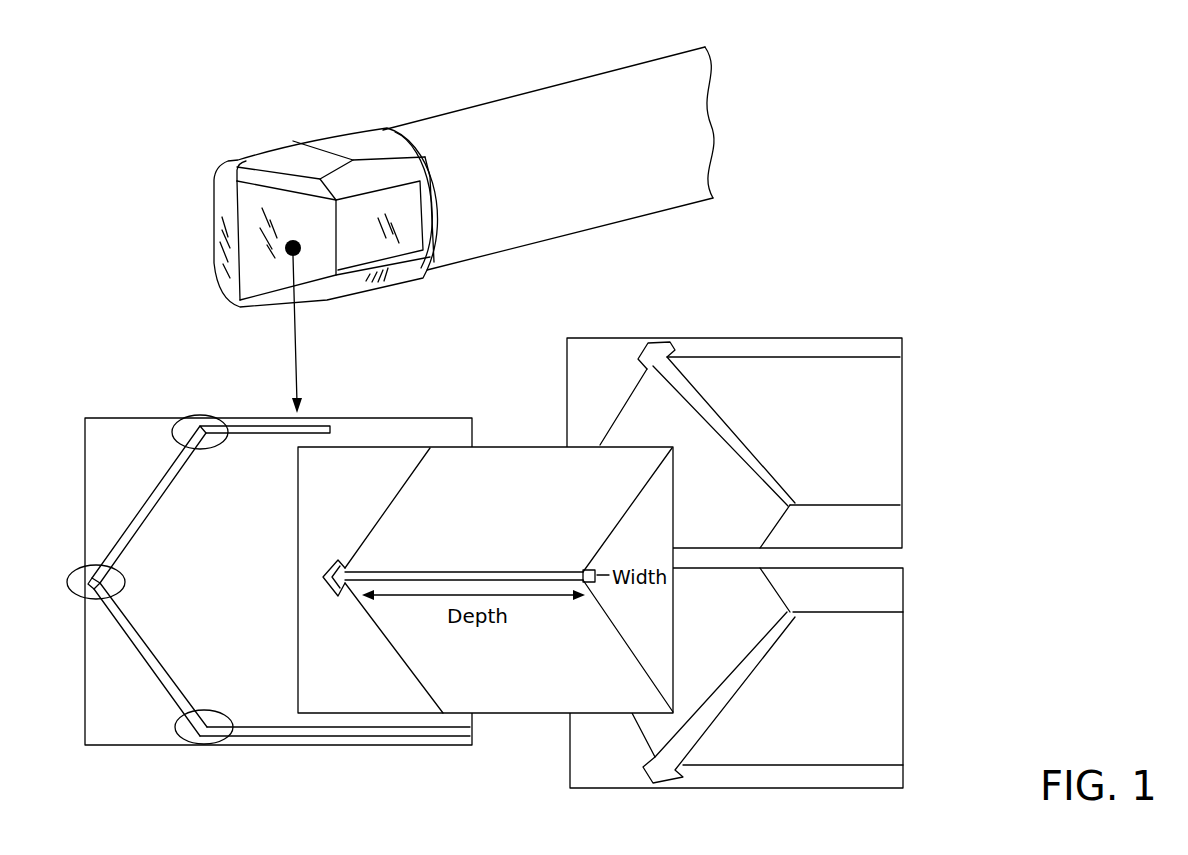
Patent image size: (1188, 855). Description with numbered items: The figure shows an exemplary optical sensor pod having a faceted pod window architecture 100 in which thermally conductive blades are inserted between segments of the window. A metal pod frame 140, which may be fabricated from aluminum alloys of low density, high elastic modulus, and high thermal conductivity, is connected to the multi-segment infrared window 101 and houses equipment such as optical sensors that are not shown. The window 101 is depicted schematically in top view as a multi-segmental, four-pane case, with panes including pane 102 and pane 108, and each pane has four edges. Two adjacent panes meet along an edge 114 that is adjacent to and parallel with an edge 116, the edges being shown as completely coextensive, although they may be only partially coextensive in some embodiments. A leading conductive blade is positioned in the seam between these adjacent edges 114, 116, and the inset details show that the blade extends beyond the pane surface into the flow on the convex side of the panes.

The faceted pod window architecture 100 is at (156, 88).
The window 101 is at (300, 113).
The pane 102 is at (253, 423).
The pane 108 is at (260, 727).
The edge 114 is at (100, 585).
The edge 116 is at (97, 578).
The metal pod frame 140 is at (505, 112).